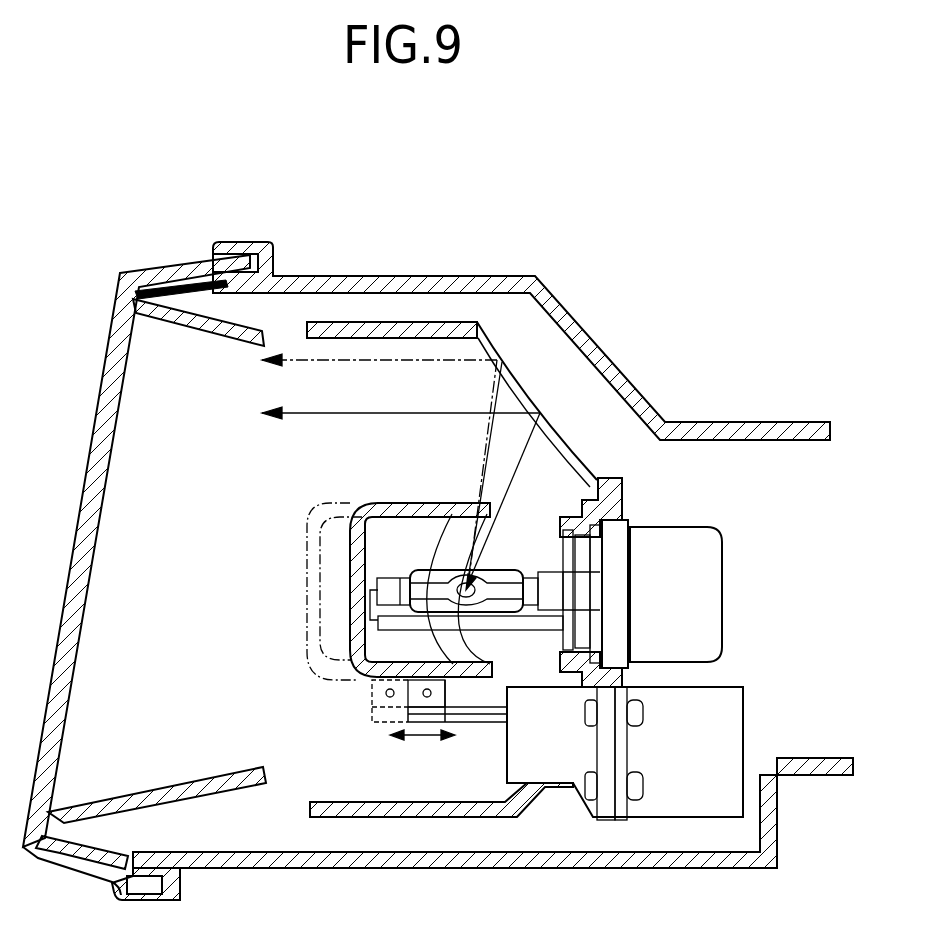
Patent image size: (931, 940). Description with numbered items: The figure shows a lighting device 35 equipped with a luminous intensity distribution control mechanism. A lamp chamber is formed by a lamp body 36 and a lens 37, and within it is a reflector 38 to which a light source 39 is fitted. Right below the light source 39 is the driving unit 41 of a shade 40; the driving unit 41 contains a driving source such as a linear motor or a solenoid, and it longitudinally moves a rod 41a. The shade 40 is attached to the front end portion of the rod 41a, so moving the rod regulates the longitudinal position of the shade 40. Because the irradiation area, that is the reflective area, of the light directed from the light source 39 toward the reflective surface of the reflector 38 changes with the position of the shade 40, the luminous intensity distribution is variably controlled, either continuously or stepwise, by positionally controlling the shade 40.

The lighting device 35 is at (681, 236).
The lamp body 36 is at (383, 276).
The lens 37 is at (83, 420).
The reflector 38 is at (526, 366).
The light source 39 is at (712, 574).
The shade 40 is at (428, 503).
The driving unit 41 is at (738, 710).
The rod 41a is at (473, 718).